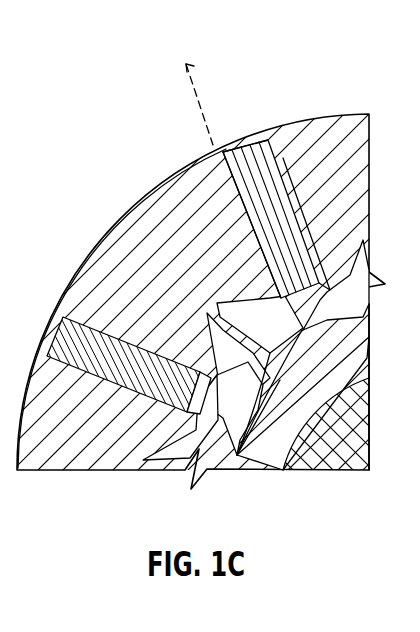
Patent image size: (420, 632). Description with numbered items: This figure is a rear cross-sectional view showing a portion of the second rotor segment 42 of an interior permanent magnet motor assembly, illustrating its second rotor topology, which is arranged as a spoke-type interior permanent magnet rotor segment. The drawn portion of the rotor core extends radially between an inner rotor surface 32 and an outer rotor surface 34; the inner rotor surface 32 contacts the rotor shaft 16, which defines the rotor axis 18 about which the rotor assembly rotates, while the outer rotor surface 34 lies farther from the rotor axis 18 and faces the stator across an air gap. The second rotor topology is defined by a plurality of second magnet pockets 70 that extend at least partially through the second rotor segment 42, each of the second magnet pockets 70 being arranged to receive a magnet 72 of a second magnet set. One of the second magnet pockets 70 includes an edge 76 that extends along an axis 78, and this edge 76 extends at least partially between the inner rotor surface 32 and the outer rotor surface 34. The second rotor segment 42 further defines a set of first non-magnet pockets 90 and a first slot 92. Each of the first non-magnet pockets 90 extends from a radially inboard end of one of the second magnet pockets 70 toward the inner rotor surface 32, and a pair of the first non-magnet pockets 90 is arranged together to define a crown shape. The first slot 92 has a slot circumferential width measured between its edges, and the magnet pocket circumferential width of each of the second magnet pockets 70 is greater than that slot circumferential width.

The second rotor segment 42 is at (159, 120).
The outer rotor surface 34 is at (123, 217).
The edge 76 is at (238, 198).
The second magnet pockets 70 is at (256, 258).
The magnet 72 is at (260, 170).
The first slot 92 is at (241, 138).
The axis 78 is at (193, 60).
The inner rotor surface 32 is at (368, 358).
The first non-magnet pockets 90 is at (237, 455).
The rotor shaft 16 is at (338, 452).
The rotor axis 18 is at (369, 471).